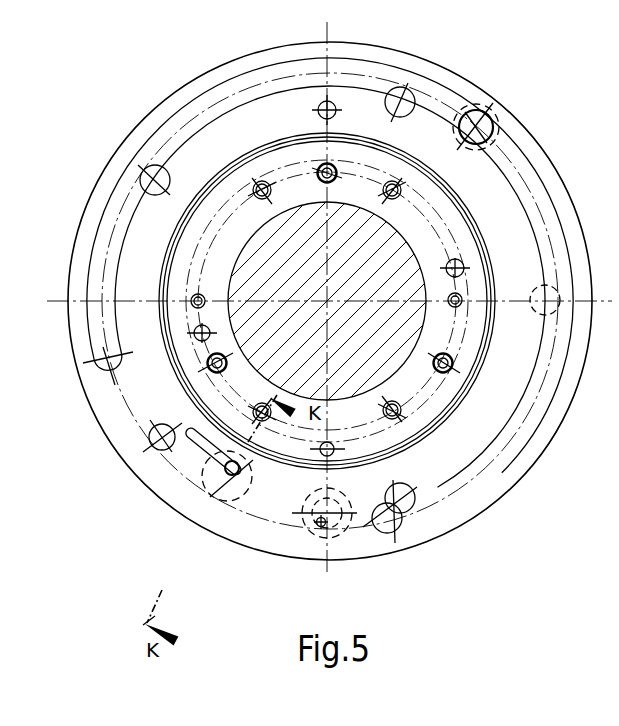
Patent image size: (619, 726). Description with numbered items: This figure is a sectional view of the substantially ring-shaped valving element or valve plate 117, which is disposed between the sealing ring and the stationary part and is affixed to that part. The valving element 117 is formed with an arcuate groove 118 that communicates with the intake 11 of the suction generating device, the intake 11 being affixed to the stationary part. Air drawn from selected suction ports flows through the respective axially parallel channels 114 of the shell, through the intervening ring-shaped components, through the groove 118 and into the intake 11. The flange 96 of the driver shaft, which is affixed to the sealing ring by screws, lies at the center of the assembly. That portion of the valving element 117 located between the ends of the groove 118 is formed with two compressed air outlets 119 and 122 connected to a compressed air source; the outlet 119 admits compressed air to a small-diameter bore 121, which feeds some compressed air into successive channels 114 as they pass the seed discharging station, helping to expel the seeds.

The intake 11 is at (480, 116).
The flange 96 is at (428, 417).
The channels 114 is at (272, 286).
The valving element 117 is at (107, 413).
The arcuate groove 118 is at (523, 163).
The compressed air outlet 119 is at (343, 523).
The small-diameter bore 121 is at (318, 528).
The compressed air outlet 122 is at (220, 488).